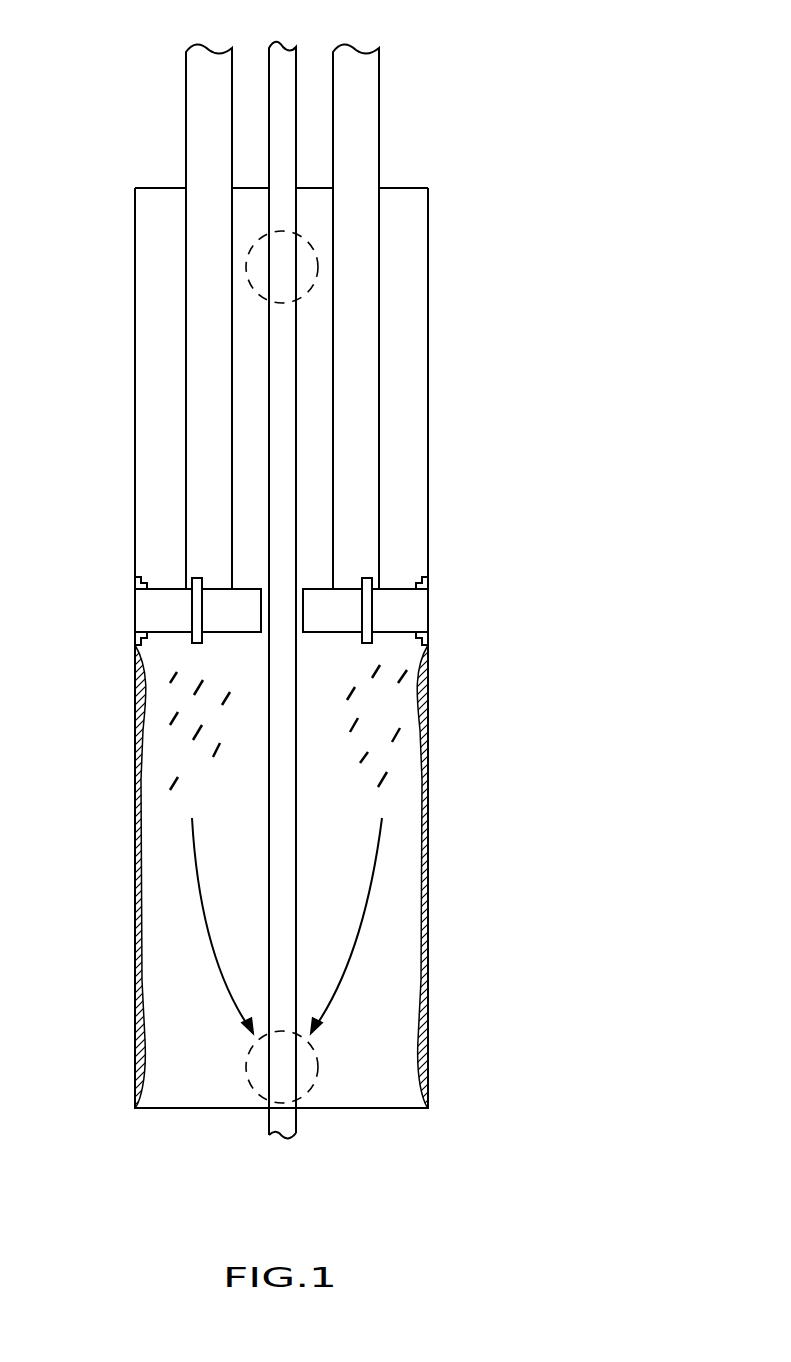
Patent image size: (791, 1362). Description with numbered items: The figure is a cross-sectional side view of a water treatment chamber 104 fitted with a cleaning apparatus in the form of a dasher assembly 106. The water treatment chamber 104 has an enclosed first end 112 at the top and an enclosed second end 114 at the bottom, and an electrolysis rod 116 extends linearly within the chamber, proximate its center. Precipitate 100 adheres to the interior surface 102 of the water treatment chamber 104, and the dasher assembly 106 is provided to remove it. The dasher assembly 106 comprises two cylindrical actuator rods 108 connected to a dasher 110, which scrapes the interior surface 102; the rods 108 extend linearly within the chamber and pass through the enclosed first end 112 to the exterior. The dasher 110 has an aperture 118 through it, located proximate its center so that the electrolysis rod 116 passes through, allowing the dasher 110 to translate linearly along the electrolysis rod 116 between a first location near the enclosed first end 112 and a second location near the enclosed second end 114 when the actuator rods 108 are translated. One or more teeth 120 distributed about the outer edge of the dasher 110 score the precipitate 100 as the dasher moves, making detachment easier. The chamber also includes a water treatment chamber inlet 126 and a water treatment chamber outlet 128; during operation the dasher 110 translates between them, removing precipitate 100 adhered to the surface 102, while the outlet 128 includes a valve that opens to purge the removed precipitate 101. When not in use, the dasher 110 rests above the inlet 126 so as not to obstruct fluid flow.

The precipitate 100 is at (143, 1010).
The removed precipitate 101 is at (202, 778).
The interior surface 102 is at (138, 217).
The water treatment chamber 104 is at (433, 398).
The dasher assembly 106 is at (402, 550).
The cylindrical actuator rods 108 is at (192, 85).
The dasher 110 is at (410, 612).
The enclosed first end 112 is at (395, 188).
The enclosed second end 114 is at (390, 1108).
The electrolysis rod 116 is at (283, 73).
The aperture 118 is at (307, 642).
The teeth 120 is at (135, 583).
The water treatment chamber inlet 126 is at (245, 265).
The water treatment chamber outlet 128 is at (247, 1082).